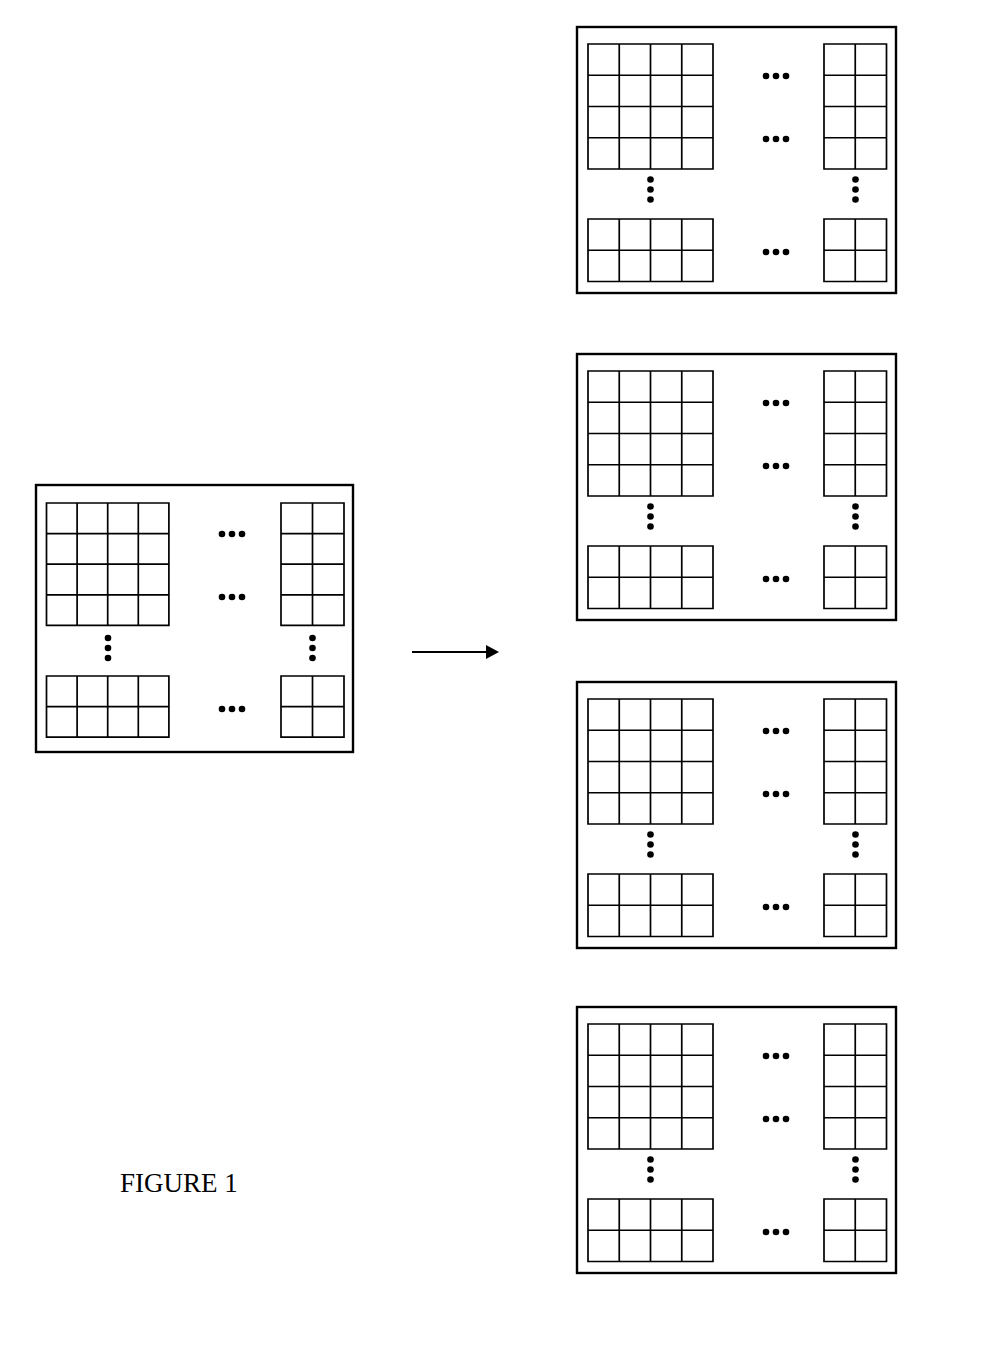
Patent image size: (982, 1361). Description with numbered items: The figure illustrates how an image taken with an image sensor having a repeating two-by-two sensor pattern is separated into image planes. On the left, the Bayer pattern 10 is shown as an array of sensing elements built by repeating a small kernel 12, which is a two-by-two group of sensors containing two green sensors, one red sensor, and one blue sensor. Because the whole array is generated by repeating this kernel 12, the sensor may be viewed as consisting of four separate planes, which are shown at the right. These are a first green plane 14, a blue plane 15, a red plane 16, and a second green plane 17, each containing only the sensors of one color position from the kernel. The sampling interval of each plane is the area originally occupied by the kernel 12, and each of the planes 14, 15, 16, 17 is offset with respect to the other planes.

The Bayer pattern 10 is at (318, 484).
The kernel 12 is at (283, 676).
The green plane 14 is at (578, 80).
The blue plane 15 is at (578, 418).
The red plane 16 is at (578, 747).
The green plane 17 is at (578, 1062).